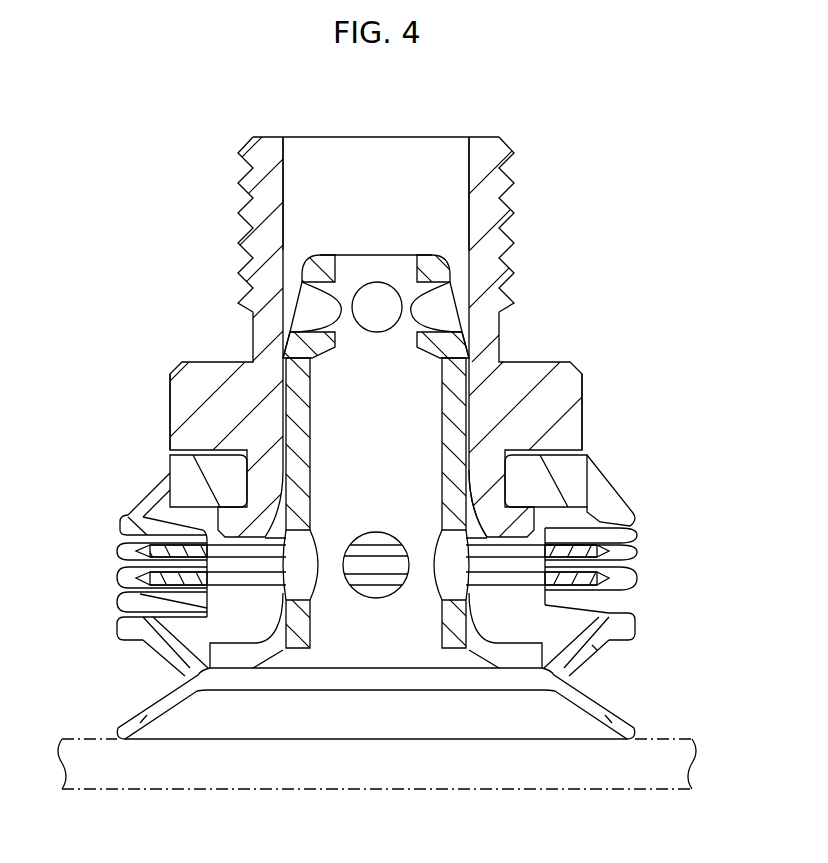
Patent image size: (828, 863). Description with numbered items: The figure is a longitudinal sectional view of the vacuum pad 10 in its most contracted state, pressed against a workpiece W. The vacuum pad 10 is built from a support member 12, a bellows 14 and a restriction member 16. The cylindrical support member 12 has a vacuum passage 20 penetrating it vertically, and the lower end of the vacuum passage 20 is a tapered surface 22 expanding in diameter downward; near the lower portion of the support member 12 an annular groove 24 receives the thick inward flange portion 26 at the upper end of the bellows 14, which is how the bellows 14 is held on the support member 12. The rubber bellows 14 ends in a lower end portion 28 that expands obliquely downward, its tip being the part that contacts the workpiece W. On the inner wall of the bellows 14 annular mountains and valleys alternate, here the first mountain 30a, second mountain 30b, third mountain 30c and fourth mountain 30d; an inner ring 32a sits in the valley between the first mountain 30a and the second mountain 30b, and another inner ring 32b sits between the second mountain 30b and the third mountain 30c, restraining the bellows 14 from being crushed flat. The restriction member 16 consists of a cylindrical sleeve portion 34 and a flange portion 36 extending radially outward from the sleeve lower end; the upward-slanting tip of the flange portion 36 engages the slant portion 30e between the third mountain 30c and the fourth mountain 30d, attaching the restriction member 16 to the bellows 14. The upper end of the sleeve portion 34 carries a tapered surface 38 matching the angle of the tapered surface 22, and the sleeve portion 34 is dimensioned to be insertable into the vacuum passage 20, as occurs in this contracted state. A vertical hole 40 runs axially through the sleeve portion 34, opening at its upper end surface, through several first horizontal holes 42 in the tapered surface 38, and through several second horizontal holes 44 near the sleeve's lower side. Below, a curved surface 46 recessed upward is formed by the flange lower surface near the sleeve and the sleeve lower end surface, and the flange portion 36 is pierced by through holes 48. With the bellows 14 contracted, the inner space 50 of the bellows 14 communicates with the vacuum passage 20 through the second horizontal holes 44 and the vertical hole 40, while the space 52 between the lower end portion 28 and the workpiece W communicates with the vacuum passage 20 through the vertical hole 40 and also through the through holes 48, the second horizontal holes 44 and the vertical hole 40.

The vacuum pad 10 is at (162, 124).
The support member 12 is at (218, 199).
The bellows 14 is at (96, 530).
The restriction member 16 is at (276, 422).
The vacuum passage 20 is at (385, 150).
The tapered surface 22 is at (283, 496).
The annular groove 24 is at (220, 483).
The inward flange portion 26 is at (555, 482).
The lower end portion 28 is at (610, 718).
The first mountain 30a is at (198, 533).
The second mountain 30b is at (205, 572).
The third mountain 30c is at (195, 598).
The fourth mountain 30d is at (193, 678).
The slant portion 30e is at (597, 655).
The inner ring 32a is at (570, 545).
The inner ring 32b is at (590, 573).
The sleeve portion 34 is at (478, 420).
The flange portion 36 is at (590, 632).
The tapered surface 38 is at (448, 265).
The vertical hole 40 is at (340, 386).
The first horizontal holes 42 is at (425, 295).
The second horizontal holes 44 is at (455, 575).
The curved surface 46 is at (290, 650).
The through holes 48 is at (503, 655).
The inner space 50 is at (223, 598).
The space 52 is at (240, 724).
The workpiece W is at (375, 768).